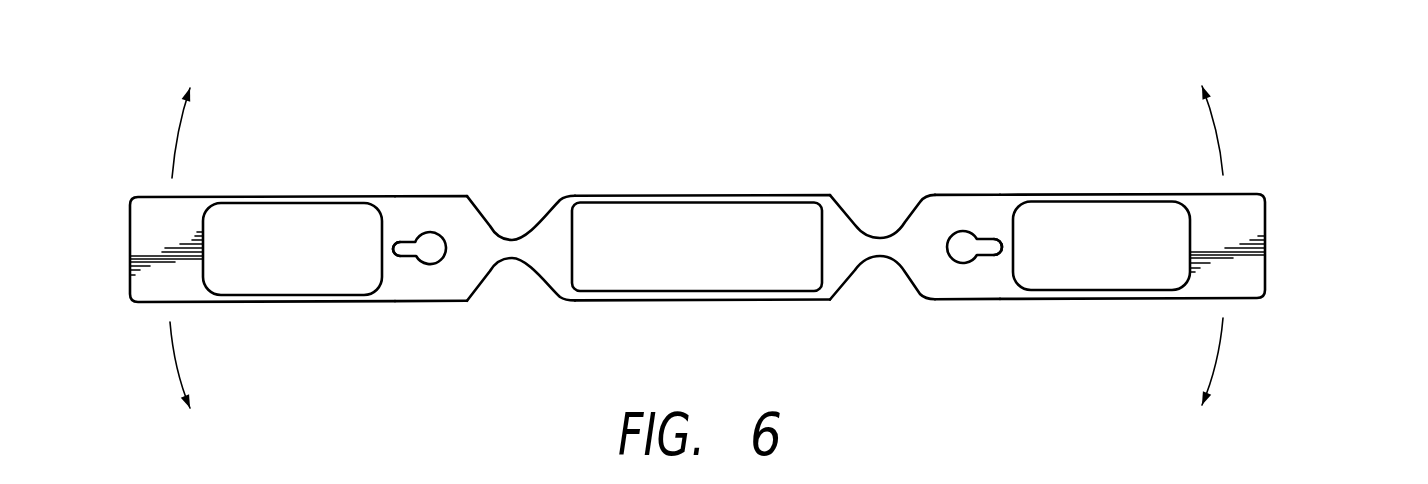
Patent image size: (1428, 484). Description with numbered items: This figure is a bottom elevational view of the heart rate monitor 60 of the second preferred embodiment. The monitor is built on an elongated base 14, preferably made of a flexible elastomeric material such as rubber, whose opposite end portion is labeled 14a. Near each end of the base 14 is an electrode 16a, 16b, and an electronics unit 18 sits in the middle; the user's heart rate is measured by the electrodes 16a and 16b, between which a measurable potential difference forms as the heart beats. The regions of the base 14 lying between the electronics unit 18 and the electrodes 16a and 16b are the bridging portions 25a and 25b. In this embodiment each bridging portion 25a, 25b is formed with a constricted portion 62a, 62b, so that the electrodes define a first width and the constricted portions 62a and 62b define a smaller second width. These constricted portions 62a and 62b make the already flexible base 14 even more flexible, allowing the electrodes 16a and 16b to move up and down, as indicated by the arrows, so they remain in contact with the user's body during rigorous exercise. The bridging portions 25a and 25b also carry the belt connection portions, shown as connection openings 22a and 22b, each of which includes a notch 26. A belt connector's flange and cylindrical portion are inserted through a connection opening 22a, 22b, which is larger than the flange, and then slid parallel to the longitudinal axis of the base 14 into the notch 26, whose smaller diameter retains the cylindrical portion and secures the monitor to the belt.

The heart rate monitor 60 is at (1267, 142).
The base 14 is at (220, 197).
The second end plate portion 14a is at (1235, 230).
The electrode 16a is at (303, 222).
The electrode 16b is at (1104, 277).
The electronics unit 18 is at (686, 218).
The bridging portion 25a is at (423, 207).
The bridging portion 25b is at (984, 207).
The constricted portion 62a is at (512, 240).
The constricted portion 62b is at (880, 238).
The connection opening 22a is at (430, 248).
The connection opening 22b is at (963, 247).
The notch 26 is at (397, 256).